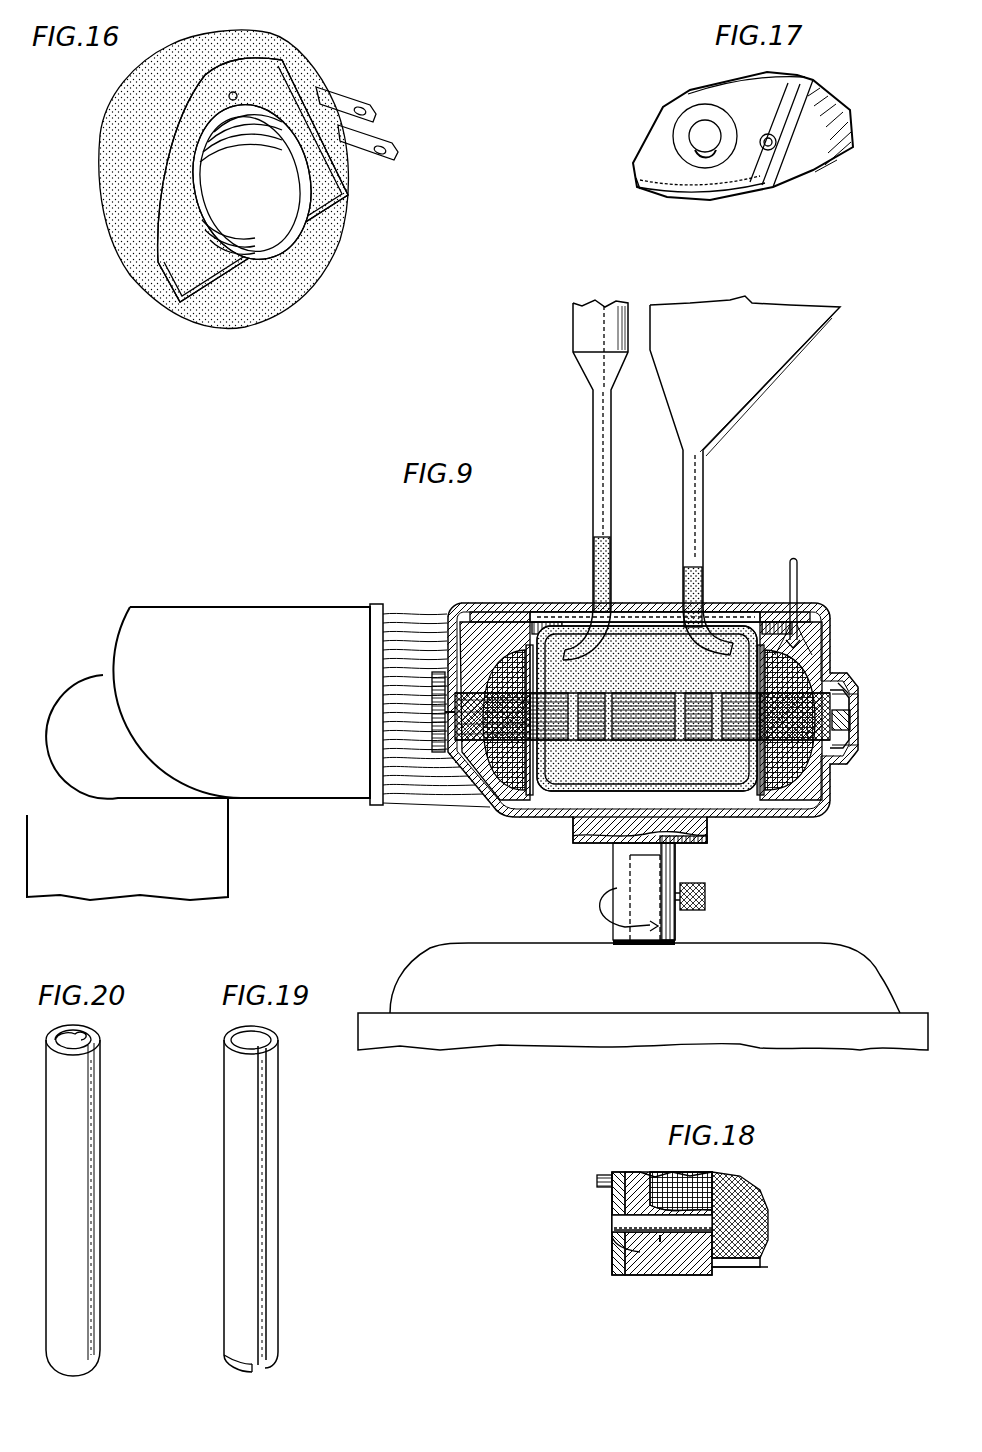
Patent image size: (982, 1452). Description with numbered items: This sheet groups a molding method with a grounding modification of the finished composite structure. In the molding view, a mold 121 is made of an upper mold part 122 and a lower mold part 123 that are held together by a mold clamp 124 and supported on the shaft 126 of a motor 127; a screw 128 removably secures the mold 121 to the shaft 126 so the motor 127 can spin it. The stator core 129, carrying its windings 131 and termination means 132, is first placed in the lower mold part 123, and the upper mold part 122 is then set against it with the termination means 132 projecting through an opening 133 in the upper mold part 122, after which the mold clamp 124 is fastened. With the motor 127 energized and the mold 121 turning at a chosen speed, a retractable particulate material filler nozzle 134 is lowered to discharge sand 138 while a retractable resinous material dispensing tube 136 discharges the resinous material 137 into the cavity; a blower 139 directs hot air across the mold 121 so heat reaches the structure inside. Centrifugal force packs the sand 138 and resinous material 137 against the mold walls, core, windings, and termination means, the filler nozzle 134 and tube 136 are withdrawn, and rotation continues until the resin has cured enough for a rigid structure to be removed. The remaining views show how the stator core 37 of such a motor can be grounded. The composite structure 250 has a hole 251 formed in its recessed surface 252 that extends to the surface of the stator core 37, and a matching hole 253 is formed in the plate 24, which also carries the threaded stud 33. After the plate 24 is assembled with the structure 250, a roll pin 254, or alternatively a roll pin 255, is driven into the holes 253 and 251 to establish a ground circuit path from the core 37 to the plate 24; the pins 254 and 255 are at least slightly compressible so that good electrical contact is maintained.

In FIG. 17, the bearing support 24 is at (668, 164).
In FIG. 18, the bearing support 24 is at (612, 1203).
In FIG. 17, the threaded stud 33 is at (695, 128).
In FIG. 18, the threaded stud 33 is at (612, 1246).
In FIG. 18, the stator core 37 is at (740, 1250).
In FIG. 9, the mold 121 is at (462, 605).
In FIG. 9, the upper mold part 122 is at (830, 622).
In FIG. 9, the lower mold part 123 is at (782, 815).
In FIG. 9, the mold clamp 124 is at (858, 713).
In FIG. 9, the shaft 126 is at (613, 940).
In FIG. 9, the motor 127 is at (420, 962).
In FIG. 9, the screw 128 is at (706, 895).
In FIG. 9, the stator core 129 is at (852, 683).
In FIG. 9, the windings 131 is at (492, 812).
In FIG. 9, the termination means 132 is at (799, 567).
In FIG. 9, the opening 133 is at (800, 612).
In FIG. 9, the particulate material filler nozzle 134 is at (688, 511).
In FIG. 9, the resinous material dispensing tube 136 is at (593, 477).
In FIG. 9, the resinous material 137 is at (593, 571).
In FIG. 9, the sand 138 is at (683, 583).
In FIG. 9, the blower 139 is at (290, 606).
In FIG. 16, the composite structure 250 is at (318, 72).
In FIG. 18, the composite structure 250 is at (695, 1262).
In FIG. 16, the hole 251 is at (229, 95).
In FIG. 18, the hole 251 is at (676, 1236).
In FIG. 16, the recessed surface 252 is at (325, 211).
In FIG. 17, the hole 253 is at (771, 136).
In FIG. 18, the roll pin 254 is at (650, 1232).
In FIG. 19, the roll pin 254 is at (266, 1165).
In FIG. 20, the roll pin 255 is at (93, 1163).